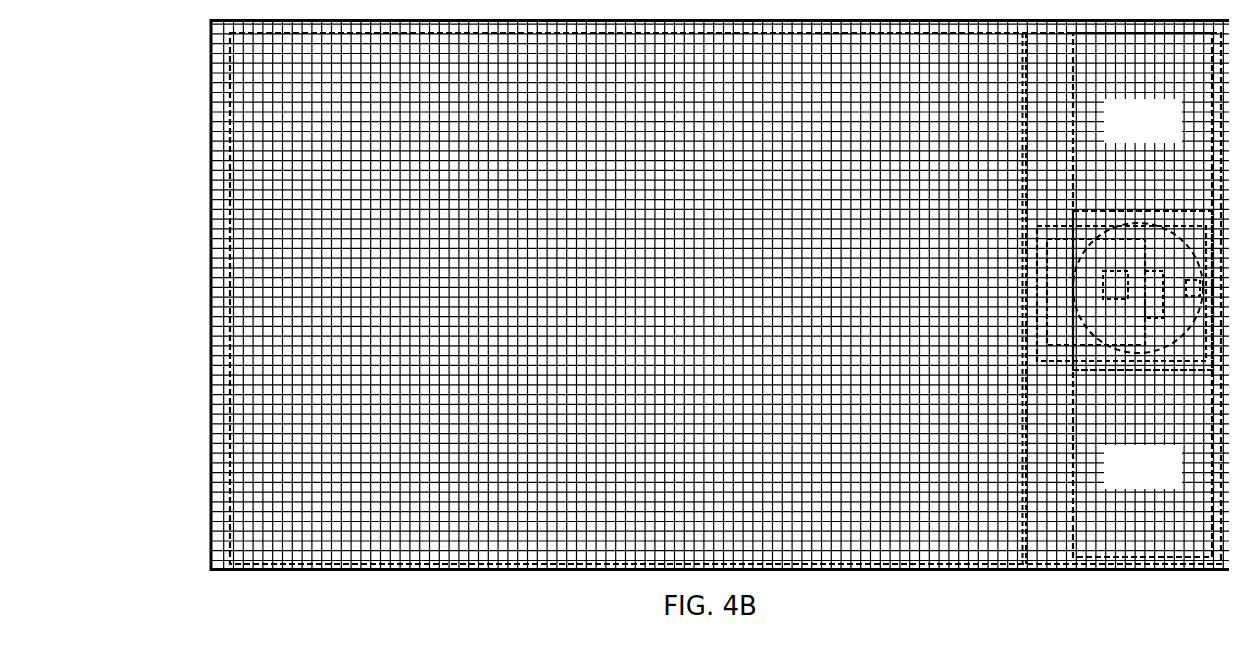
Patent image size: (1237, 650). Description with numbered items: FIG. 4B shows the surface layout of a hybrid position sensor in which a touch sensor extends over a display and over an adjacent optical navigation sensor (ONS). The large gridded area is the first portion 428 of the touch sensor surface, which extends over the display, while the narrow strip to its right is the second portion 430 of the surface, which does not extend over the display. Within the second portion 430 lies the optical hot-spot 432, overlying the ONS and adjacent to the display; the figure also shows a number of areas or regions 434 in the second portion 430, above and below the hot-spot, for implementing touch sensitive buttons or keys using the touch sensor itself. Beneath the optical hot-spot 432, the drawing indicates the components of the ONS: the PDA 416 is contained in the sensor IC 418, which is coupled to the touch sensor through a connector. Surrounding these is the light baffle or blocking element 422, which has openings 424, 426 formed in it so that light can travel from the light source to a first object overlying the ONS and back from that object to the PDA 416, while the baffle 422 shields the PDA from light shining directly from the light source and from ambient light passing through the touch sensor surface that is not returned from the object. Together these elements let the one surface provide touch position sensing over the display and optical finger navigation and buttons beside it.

The PDA 416 is at (1110, 280).
The sensor IC 418 is at (1039, 297).
The light baffle or blocking element 422 is at (1029, 238).
The opening 424 is at (1179, 289).
The opening 426 is at (1148, 292).
The first portion 428 is at (572, 282).
The second portion 430 is at (1022, 52).
The optical hot-spot 432 is at (1175, 218).
The areas or regions 434 is at (1065, 116).